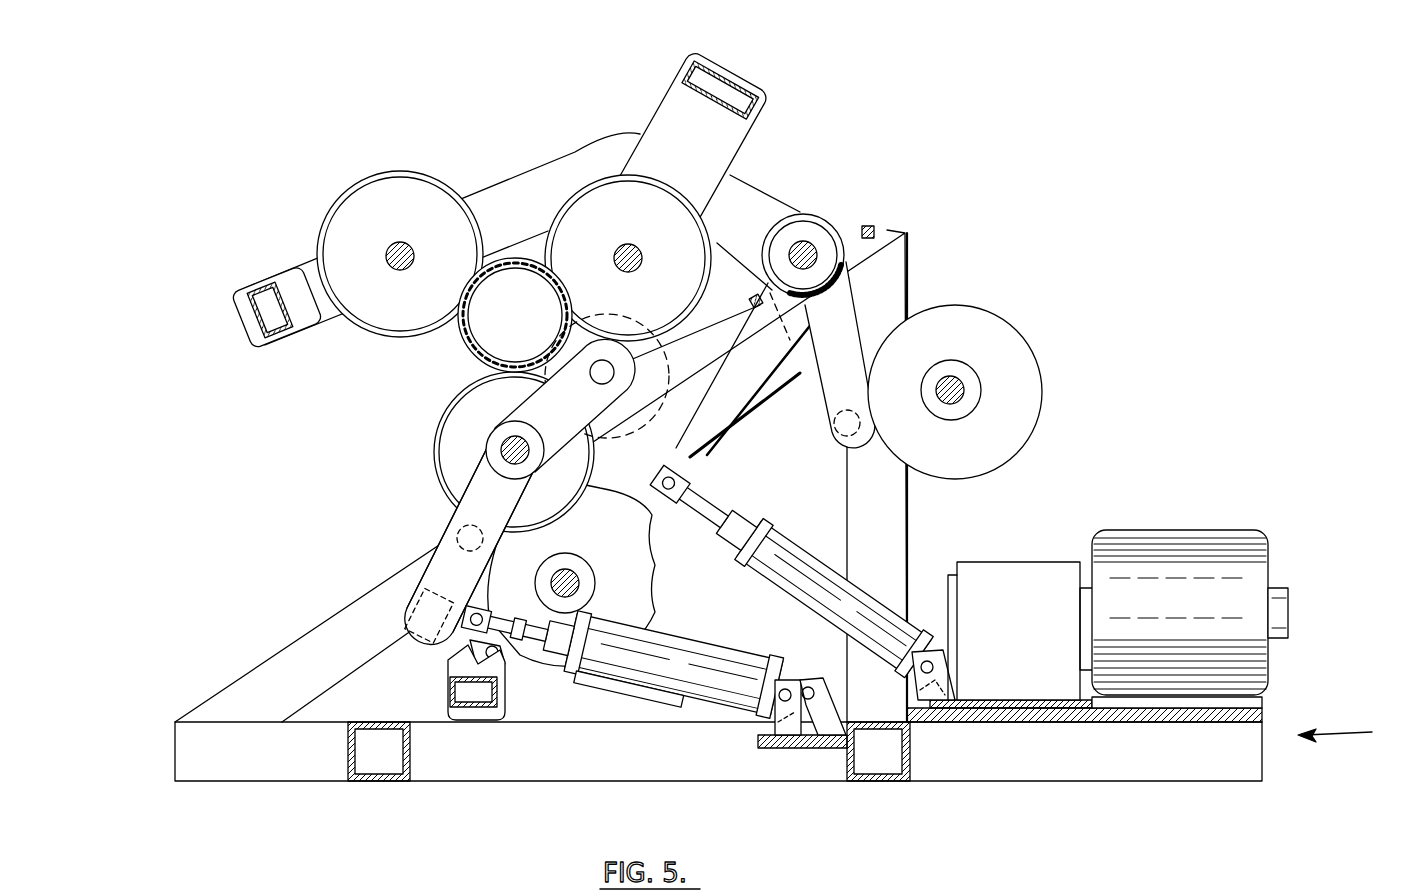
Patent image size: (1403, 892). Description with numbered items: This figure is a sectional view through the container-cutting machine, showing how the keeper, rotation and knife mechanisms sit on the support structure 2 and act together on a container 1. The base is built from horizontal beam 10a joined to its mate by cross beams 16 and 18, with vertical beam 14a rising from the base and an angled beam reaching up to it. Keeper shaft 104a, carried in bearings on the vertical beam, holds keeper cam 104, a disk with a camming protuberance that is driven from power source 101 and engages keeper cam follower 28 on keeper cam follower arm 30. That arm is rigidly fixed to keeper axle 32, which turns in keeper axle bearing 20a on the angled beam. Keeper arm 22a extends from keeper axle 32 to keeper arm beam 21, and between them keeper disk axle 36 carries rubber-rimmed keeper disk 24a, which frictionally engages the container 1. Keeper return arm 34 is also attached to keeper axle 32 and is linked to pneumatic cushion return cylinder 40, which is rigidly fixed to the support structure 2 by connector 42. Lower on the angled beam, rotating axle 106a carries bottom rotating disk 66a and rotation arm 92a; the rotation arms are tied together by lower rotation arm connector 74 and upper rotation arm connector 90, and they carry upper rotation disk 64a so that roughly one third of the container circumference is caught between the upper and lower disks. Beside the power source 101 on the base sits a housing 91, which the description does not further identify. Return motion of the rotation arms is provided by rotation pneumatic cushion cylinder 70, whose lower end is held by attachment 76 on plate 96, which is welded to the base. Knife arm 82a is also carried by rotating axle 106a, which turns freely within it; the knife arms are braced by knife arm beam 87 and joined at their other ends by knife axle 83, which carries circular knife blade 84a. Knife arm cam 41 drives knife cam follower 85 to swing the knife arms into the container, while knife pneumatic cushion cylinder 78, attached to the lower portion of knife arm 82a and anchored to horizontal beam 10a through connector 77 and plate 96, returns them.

The container 1 is at (460, 343).
The support structure 2 is at (1394, 748).
The horizontal beam 10a is at (291, 768).
The vertical beam 14a is at (908, 535).
The cross beam 16 is at (882, 772).
The cross beam 18 is at (385, 775).
The keeper axle bearing 20a is at (885, 235).
The keeper arm beam 21 is at (250, 322).
The keeper arm 22a is at (540, 185).
The keeper disk 24a is at (352, 225).
The keeper cam follower 28 is at (840, 440).
The keeper cam follower arm 30 is at (858, 320).
The keeper axle 32 is at (805, 246).
The keeper return arm 34 is at (728, 418).
The keeper disk axle 36 is at (410, 248).
The pneumatic cushion return cylinder 40 is at (800, 560).
The knife arm cam 41 is at (655, 582).
The connector 42 is at (952, 680).
The upper rotation disk 64a is at (615, 232).
The bottom rotating disk 66a is at (462, 420).
The rotation pneumatic cushion cylinder 70 is at (617, 690).
The lower rotation arm connector 74 is at (470, 712).
The attachment 76 is at (825, 712).
The connector 77 is at (775, 722).
The knife pneumatic cushion cylinder 78 is at (683, 655).
The knife arm 82a is at (480, 496).
The knife axle 83 is at (612, 372).
The circular knife blade 84a is at (615, 410).
The knife cam follower 85 is at (458, 537).
The knife arm beam 87 is at (408, 617).
The upper rotation arm connector 90 is at (735, 80).
The housing 91 is at (1005, 575).
The rotation arm 92a is at (712, 160).
The plate 96 is at (808, 760).
The power source 101 is at (1168, 555).
The keeper cam 104 is at (1005, 350).
The keeper shaft 104a is at (958, 405).
The rotating axle 106a is at (505, 452).